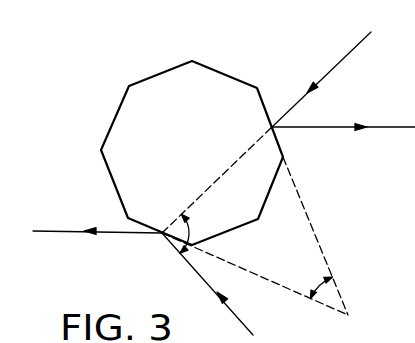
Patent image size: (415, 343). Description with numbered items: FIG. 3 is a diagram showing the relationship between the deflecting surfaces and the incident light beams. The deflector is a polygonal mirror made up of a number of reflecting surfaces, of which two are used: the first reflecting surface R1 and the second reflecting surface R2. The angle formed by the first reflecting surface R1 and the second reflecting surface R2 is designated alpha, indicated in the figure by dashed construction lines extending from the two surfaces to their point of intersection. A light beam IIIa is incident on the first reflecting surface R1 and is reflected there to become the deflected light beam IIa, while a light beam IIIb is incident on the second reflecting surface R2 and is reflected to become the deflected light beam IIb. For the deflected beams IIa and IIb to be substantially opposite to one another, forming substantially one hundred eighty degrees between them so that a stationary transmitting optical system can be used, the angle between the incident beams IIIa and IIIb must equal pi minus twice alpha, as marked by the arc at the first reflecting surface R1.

The light beam IIa is at (108, 233).
The light beam IIb is at (330, 128).
The light beam incident on the first reflecting surface IIIa is at (198, 277).
The light beam incident on the second reflecting surface IIIb is at (340, 60).
The first reflecting surface R1 is at (146, 224).
The second reflecting surface R2 is at (263, 100).